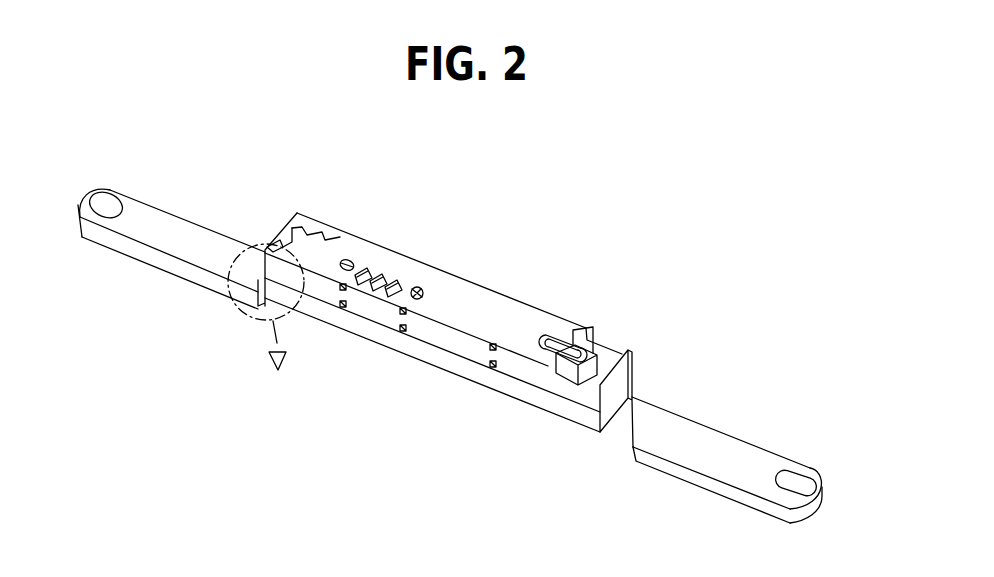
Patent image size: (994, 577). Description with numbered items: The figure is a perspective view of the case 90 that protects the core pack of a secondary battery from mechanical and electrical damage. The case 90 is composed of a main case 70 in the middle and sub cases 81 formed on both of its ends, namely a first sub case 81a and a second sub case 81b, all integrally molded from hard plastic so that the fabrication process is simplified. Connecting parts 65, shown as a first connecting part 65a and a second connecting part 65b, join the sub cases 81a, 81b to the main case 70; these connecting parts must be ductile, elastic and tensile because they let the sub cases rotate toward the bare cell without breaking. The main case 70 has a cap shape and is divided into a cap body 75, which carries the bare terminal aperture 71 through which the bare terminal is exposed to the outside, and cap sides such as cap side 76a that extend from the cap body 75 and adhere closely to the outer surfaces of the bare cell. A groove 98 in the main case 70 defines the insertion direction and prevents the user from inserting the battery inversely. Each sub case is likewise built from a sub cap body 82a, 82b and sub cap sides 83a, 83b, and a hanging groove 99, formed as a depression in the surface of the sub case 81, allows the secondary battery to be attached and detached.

The case 90 is at (775, 301).
The connecting part 65 is at (290, 103).
The first connecting part 65a is at (258, 290).
The second connecting part 65b is at (634, 397).
The main case 70 is at (472, 279).
The bare terminal aperture 71 is at (368, 266).
The cap body 75 is at (515, 308).
The cap side 76a is at (380, 333).
The groove 98 is at (305, 236).
The sub case 81 is at (116, 367).
The first sub case 81a is at (173, 267).
The second sub case 81b is at (620, 453).
The sub cap body 82a is at (145, 237).
The sub cap body 82b is at (708, 465).
The sub cap side 83a is at (198, 278).
The sub cap side 83b is at (720, 490).
The hanging groove 99 is at (800, 481).